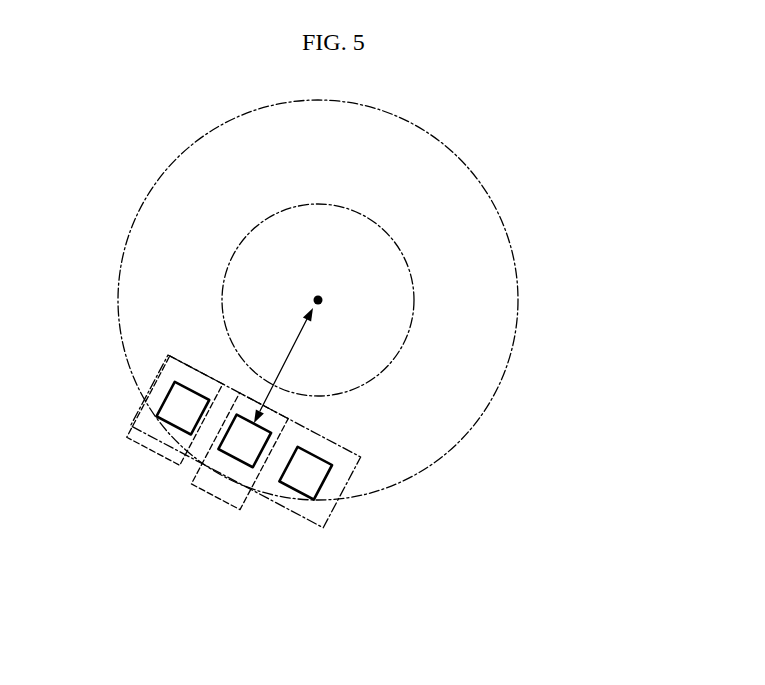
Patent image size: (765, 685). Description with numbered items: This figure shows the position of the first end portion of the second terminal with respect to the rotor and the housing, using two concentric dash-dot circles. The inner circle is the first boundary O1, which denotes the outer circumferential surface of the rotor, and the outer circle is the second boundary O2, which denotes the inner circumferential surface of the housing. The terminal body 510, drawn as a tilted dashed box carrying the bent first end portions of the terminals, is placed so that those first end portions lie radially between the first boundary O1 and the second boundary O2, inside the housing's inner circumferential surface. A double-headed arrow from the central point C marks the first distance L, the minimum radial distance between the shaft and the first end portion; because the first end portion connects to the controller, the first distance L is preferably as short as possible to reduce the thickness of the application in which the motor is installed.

The terminal body 510 is at (293, 494).
The first distance L is at (290, 367).
The center C is at (320, 298).
The first boundary O1 is at (400, 353).
The second boundary O2 is at (497, 205).